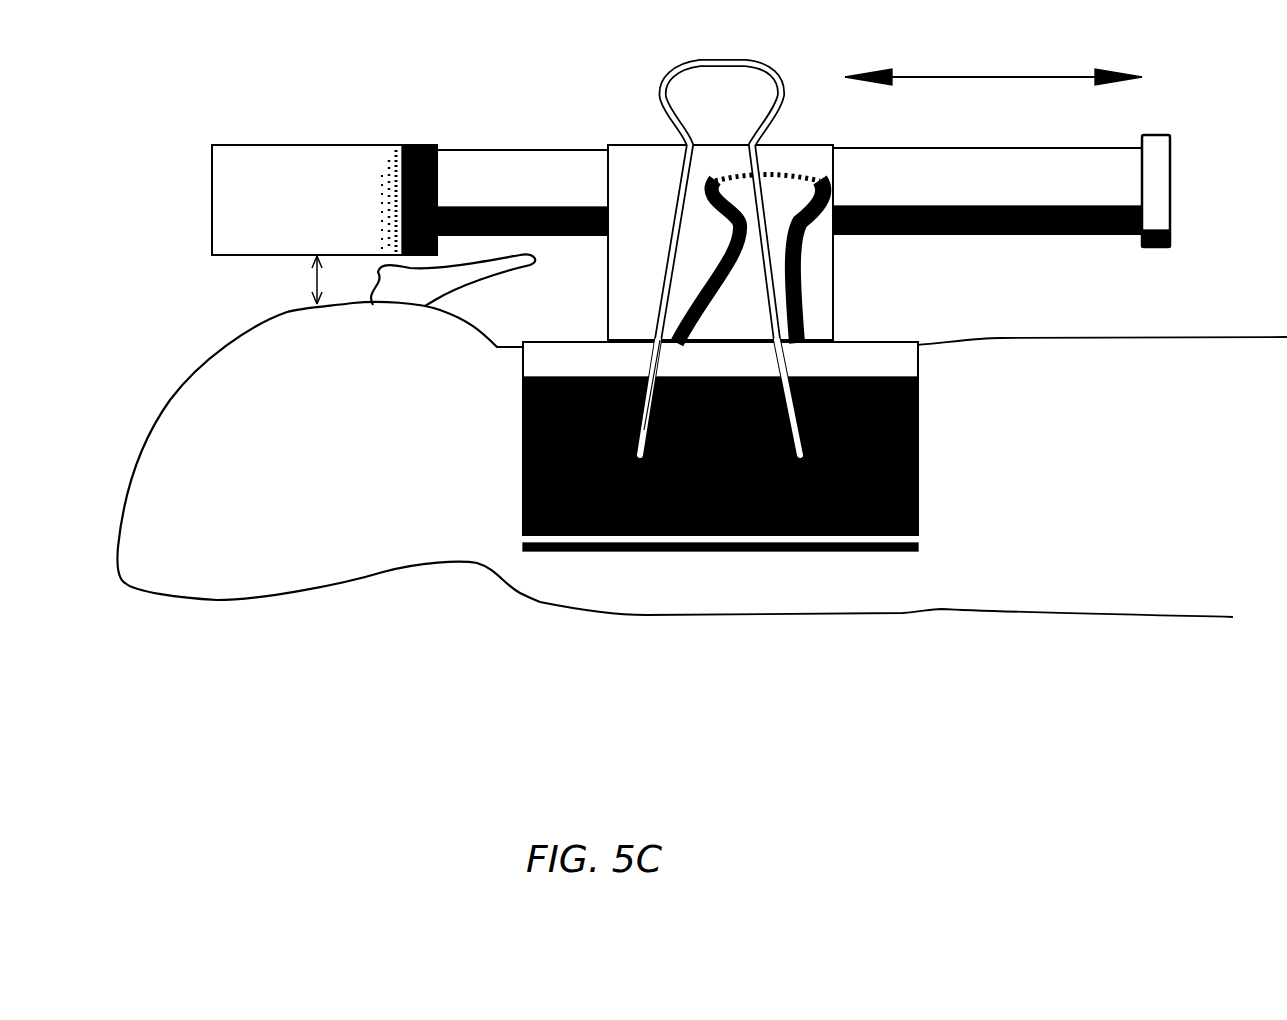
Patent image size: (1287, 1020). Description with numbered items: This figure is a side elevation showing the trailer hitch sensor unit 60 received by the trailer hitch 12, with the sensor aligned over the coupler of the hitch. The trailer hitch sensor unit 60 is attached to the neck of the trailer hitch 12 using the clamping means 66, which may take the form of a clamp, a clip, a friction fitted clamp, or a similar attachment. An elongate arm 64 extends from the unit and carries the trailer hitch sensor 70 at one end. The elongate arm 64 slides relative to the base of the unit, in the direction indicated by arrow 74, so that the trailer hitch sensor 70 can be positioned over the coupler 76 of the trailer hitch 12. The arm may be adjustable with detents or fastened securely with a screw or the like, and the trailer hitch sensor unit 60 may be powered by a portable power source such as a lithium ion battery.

The trailer hitch 12 is at (945, 601).
The trailer hitch sensor unit 60 is at (833, 277).
The elongate arm 64 is at (533, 148).
The clamping means 66 is at (918, 442).
The trailer hitch sensor 70 is at (302, 142).
The arrow 74 is at (993, 49).
The coupler 76 is at (167, 573).